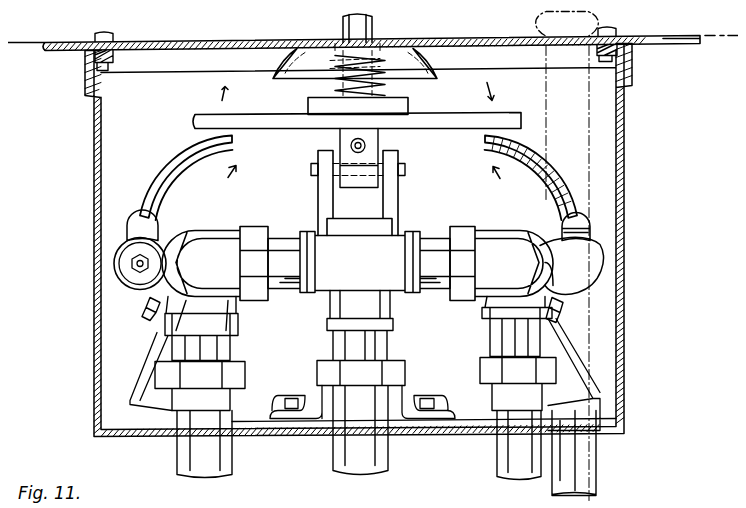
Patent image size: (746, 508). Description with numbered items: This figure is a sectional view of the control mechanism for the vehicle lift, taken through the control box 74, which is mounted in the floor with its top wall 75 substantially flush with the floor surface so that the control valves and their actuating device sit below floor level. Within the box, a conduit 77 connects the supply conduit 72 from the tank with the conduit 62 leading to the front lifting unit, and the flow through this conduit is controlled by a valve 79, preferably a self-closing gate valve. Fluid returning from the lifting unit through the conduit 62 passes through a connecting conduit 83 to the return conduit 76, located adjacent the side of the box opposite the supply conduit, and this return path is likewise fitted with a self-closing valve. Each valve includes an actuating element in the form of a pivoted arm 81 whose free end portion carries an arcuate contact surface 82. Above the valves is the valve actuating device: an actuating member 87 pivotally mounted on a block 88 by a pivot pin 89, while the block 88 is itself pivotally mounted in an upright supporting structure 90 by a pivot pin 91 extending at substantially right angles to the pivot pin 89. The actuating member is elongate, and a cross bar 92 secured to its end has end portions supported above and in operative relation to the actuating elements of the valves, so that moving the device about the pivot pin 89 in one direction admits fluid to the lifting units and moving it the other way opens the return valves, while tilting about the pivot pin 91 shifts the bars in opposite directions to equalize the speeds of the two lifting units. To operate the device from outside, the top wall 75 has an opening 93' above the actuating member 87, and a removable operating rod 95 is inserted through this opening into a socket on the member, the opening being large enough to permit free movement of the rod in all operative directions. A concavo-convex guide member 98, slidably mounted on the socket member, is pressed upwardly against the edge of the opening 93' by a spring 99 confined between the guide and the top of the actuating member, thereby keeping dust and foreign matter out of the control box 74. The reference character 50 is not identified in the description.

The valve stem 50 is at (562, 301).
The conduit 62 is at (347, 463).
The conduit 72 is at (228, 470).
The control box 74 is at (95, 389).
The top wall 75 is at (185, 41).
The return conduit 76 is at (497, 472).
The conduit 77 is at (226, 248).
The valve 79 is at (165, 300).
The pivoted arm 81 is at (155, 205).
The arcuate contact surface 82 is at (176, 150).
The connecting conduit 83 is at (490, 247).
The actuating member 87 is at (410, 105).
The block 88 is at (338, 143).
The pivot pin 89 is at (366, 146).
The upright supporting structure 90 is at (395, 206).
The pivot pin 91 is at (405, 168).
The cross bar 92 is at (240, 122).
The opening 93' is at (393, 32).
The operating rod 95 is at (343, 26).
The concavo-convex guide member 98 is at (432, 58).
The spring 99 is at (392, 86).